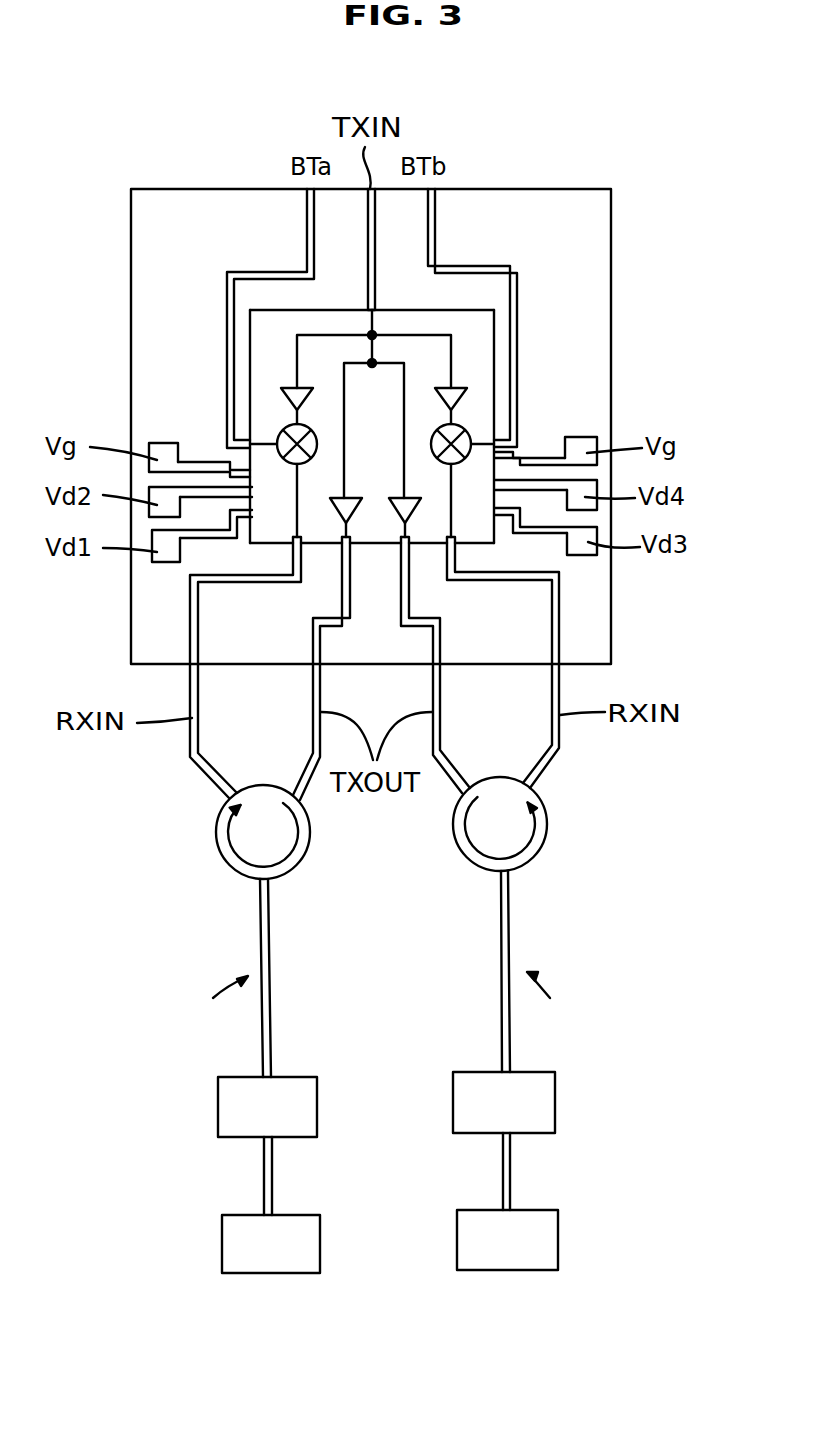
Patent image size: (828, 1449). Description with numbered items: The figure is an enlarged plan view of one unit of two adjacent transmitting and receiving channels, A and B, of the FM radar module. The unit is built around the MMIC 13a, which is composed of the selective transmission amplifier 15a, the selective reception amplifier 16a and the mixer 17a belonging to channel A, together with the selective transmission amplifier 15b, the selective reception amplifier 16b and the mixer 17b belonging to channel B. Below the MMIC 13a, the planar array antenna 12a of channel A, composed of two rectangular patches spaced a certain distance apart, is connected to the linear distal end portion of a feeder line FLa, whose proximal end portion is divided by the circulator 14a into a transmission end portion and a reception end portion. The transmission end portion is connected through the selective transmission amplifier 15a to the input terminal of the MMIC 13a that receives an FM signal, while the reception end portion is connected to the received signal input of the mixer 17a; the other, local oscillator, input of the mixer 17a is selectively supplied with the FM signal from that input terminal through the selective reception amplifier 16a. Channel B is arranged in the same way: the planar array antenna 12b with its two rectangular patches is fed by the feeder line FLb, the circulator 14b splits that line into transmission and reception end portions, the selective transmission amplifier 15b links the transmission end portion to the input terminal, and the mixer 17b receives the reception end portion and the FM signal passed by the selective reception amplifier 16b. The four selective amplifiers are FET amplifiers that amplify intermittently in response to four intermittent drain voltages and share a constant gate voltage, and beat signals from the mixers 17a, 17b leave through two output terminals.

The planar array antenna 12a is at (238, 1180).
The planar array antenna 12b is at (545, 1170).
The MMIC 13a is at (613, 347).
The circulator 14a is at (223, 850).
The circulator 14b is at (540, 842).
The selective transmission amplifier 15a is at (337, 512).
The selective transmission amplifier 15b is at (414, 512).
The selective reception amplifier 16a is at (287, 392).
The selective reception amplifier 16b is at (456, 384).
The mixer 17a is at (288, 428).
The mixer 17b is at (459, 428).
The feeder line FLa is at (262, 953).
The feeder line FLb is at (506, 953).